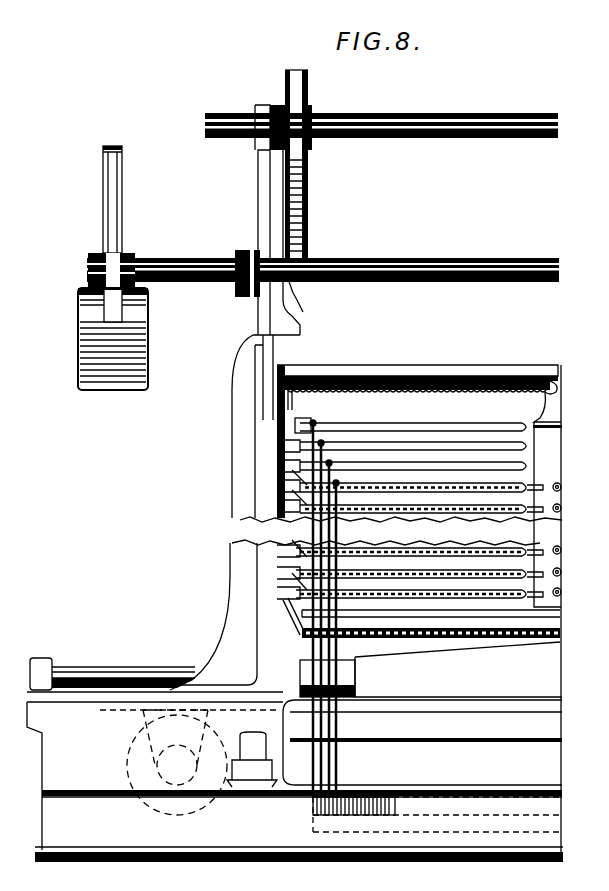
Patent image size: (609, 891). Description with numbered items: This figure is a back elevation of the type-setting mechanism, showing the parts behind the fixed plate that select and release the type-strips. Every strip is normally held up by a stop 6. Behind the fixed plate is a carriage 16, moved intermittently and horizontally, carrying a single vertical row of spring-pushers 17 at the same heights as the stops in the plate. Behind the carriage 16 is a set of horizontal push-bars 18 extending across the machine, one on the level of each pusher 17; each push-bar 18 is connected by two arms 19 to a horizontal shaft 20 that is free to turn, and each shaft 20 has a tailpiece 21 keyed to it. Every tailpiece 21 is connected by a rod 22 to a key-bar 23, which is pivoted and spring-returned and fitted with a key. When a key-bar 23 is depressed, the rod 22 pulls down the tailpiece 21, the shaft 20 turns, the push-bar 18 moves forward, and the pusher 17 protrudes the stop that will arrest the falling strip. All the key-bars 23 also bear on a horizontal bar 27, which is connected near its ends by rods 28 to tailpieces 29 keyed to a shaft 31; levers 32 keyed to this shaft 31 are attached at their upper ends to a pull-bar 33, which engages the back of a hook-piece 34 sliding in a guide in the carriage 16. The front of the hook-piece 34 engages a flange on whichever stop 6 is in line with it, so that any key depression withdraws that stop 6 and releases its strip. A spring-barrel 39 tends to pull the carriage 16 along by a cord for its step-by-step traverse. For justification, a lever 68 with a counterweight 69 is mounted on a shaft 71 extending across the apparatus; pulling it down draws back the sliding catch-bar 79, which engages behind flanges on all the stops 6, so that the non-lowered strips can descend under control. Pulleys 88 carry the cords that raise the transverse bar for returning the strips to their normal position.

The stop 6 is at (551, 400).
The carriage 16 is at (555, 442).
The spring-pusher 17 is at (565, 487).
The push-bar 18 is at (540, 545).
The arm 19 is at (288, 612).
The horizontal shaft 20 is at (452, 442).
The tailpiece 21 is at (325, 440).
The rod 22 is at (342, 722).
The key-bar 23 is at (375, 805).
The horizontal bar 27 is at (405, 832).
The rod 28 is at (313, 762).
The tailpiece 29 is at (316, 421).
The shaft 31 is at (420, 423).
The lever 32 is at (292, 400).
The pull-bar 33 is at (382, 376).
The hook-piece 34 is at (556, 380).
The spring-barrel 39 is at (128, 762).
The lever 68 is at (113, 207).
The counterweight 69 is at (148, 352).
The shaft 71 is at (180, 285).
The sliding catch-bar 79 is at (365, 366).
The pulley 88 is at (308, 200).